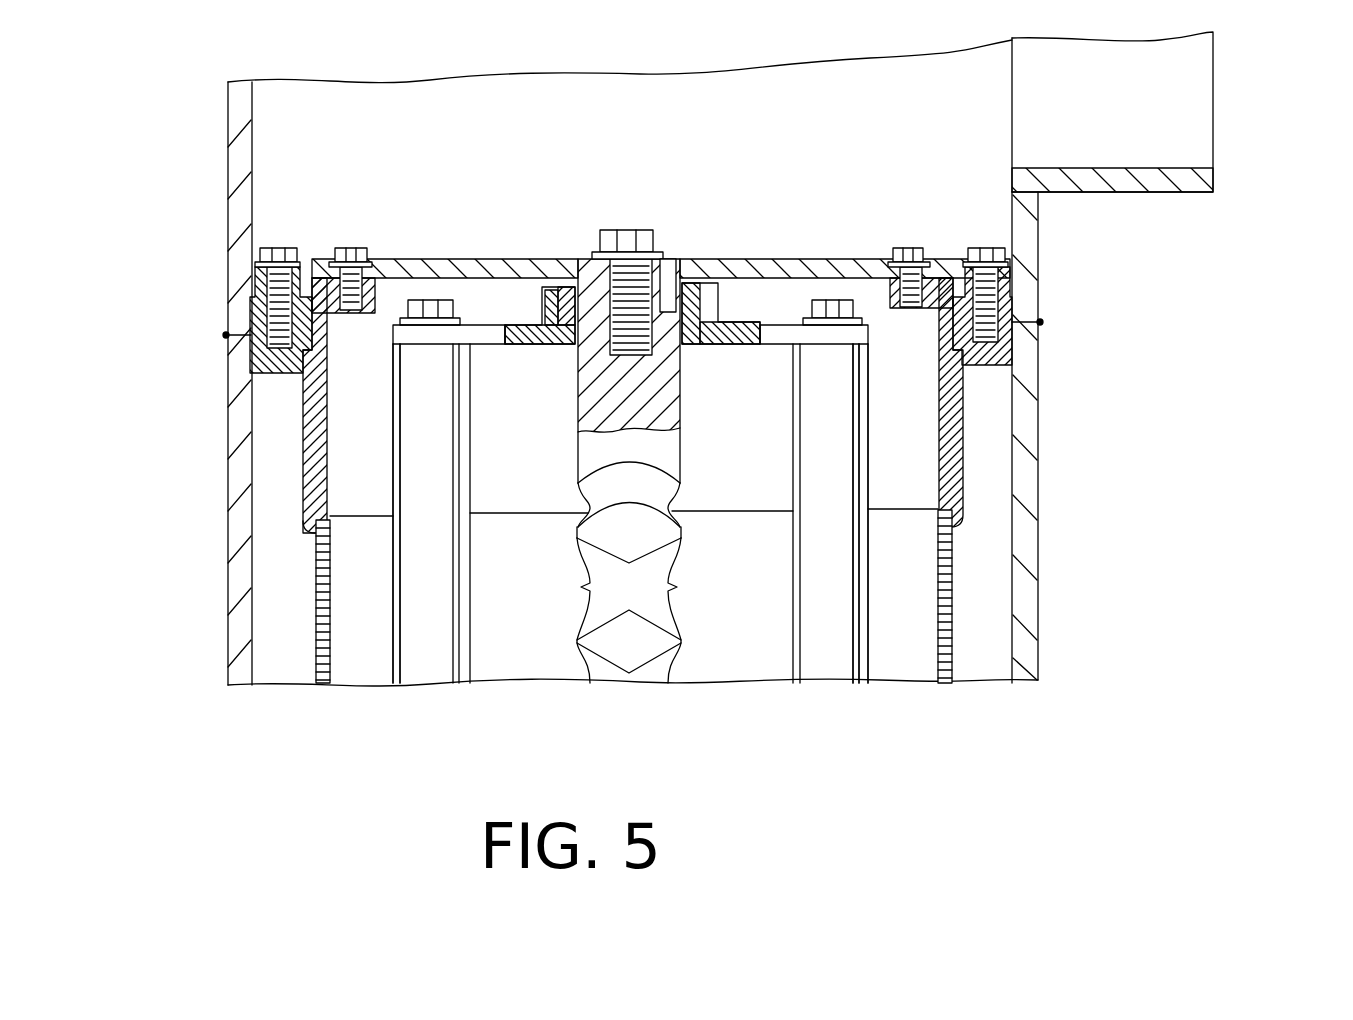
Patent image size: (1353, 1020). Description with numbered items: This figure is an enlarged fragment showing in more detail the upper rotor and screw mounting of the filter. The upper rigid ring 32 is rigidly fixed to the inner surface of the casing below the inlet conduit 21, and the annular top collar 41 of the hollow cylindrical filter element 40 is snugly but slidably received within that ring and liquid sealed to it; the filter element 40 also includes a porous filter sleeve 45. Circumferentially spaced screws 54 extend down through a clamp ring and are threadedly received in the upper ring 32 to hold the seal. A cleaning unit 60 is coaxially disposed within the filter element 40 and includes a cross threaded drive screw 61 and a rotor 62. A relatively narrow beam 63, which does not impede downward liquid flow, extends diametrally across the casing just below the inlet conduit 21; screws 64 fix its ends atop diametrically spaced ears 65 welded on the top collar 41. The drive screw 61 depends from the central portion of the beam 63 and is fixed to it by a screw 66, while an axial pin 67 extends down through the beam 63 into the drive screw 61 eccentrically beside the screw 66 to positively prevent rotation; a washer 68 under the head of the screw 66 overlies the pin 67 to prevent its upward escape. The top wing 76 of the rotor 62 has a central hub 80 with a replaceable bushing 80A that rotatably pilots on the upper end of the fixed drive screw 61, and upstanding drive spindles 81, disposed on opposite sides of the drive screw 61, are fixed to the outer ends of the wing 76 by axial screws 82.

The inlet conduit 21 is at (1213, 182).
The upper rigid ring 32 is at (262, 362).
The filter element 40 is at (312, 562).
The top collar 41 is at (313, 430).
The filter sleeve 45 is at (317, 613).
The screws 54 is at (281, 247).
The cleaning unit 60 is at (443, 692).
The cross threaded drive screw 61 is at (665, 678).
The rotor 62 is at (832, 692).
The beam 63 is at (740, 260).
The screws 64 is at (348, 247).
The ears 65 is at (393, 287).
The screw 66 is at (628, 228).
The axial pin 67 is at (675, 255).
The washer 68 is at (585, 247).
The top wing 76 is at (777, 322).
The central hub 80 is at (534, 292).
The replaceable bushing 80A is at (688, 348).
The drive spindles 81 is at (433, 663).
The axial screws 82 is at (438, 298).